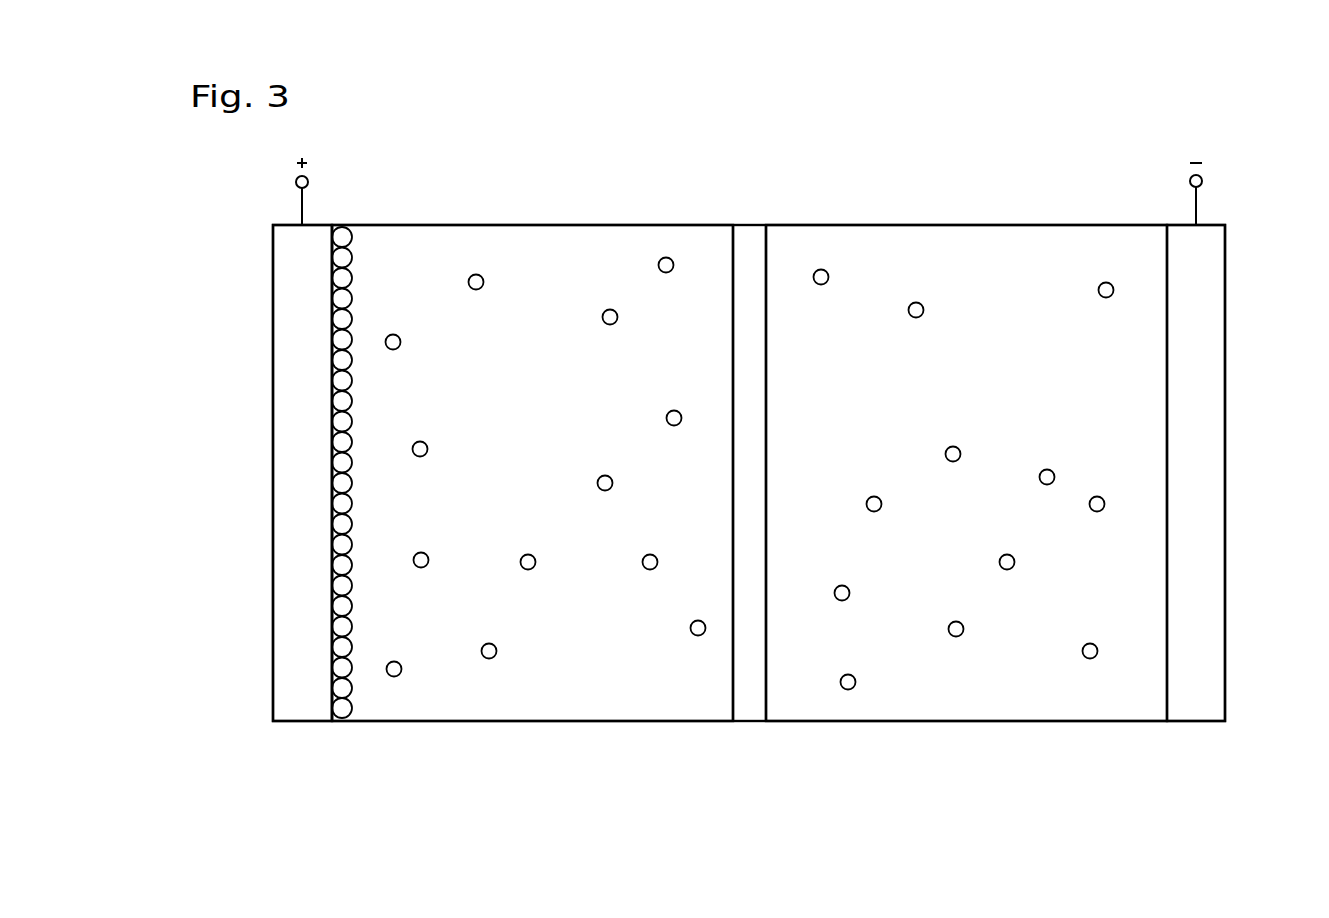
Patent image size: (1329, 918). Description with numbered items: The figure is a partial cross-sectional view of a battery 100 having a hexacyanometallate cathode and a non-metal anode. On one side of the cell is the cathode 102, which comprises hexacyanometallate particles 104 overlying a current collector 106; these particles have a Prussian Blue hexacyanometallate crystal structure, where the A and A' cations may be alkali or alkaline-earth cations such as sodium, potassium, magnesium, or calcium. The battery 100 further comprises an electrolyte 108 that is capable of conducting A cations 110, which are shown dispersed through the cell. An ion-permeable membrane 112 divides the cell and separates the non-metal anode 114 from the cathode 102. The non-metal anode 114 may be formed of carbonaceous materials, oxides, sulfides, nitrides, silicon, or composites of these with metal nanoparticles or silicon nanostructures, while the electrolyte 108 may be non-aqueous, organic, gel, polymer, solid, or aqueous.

The battery 100 is at (1236, 133).
The cathode 102 is at (299, 729).
The hexacyanometallate particles 104 is at (341, 720).
The current collector 106 is at (321, 233).
The electrolyte 108 is at (551, 411).
The A cations 110 is at (650, 570).
The ion-permeable membrane 112 is at (745, 235).
The non-metal anode 114 is at (1197, 711).